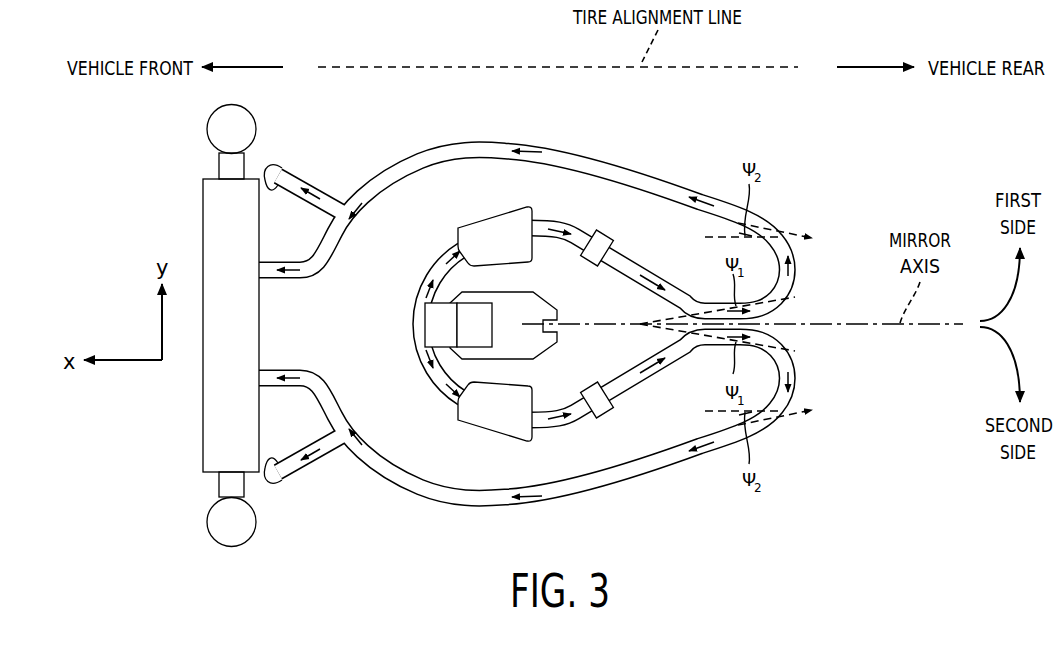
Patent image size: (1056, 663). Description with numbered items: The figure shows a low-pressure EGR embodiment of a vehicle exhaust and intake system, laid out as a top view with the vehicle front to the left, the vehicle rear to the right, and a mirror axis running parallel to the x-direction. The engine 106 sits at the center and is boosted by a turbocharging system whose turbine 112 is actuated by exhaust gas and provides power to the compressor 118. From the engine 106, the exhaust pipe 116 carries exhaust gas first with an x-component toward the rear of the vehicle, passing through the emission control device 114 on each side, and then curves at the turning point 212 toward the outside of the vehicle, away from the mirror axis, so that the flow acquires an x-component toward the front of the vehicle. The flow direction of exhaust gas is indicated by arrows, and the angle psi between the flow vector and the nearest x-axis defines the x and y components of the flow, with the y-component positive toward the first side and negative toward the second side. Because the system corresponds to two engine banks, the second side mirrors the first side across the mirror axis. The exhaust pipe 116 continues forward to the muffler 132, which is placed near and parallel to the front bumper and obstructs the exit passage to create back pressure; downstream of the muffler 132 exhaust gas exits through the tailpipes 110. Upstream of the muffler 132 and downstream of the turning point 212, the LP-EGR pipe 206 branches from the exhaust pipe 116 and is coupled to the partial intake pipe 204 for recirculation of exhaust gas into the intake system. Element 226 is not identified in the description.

The engine 106 is at (503, 325).
The tailpipes 110 is at (231, 326).
The turbine 112 is at (441, 325).
The emission control device 114 is at (495, 324).
The exhaust pipe 116 is at (432, 278).
The compressor 118 is at (474, 325).
The muffler 132 is at (231, 325).
The partial intake pipe 204 is at (277, 205).
The LP-EGR pipe 206 is at (297, 186).
The turning point 212 is at (796, 262).
The flow restrictor 226 is at (604, 246).